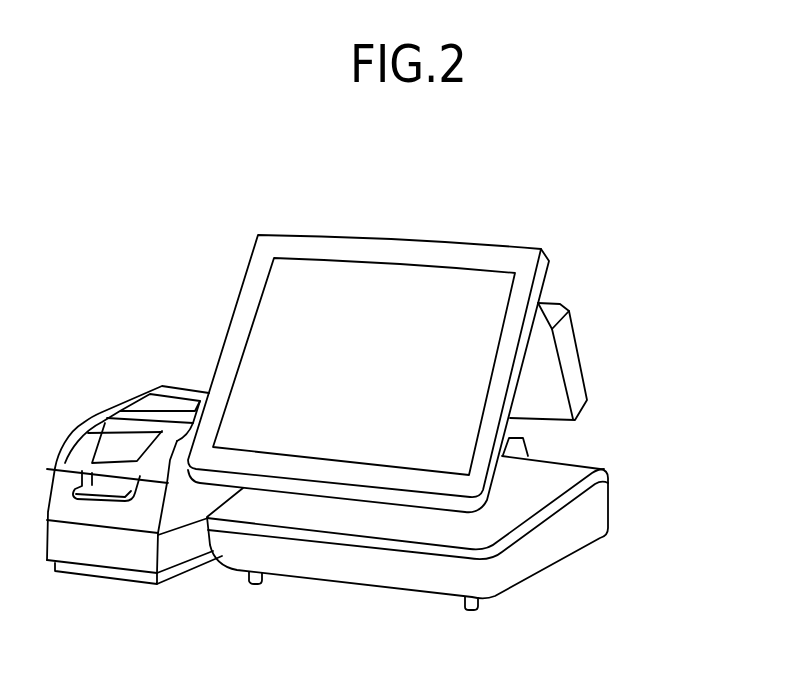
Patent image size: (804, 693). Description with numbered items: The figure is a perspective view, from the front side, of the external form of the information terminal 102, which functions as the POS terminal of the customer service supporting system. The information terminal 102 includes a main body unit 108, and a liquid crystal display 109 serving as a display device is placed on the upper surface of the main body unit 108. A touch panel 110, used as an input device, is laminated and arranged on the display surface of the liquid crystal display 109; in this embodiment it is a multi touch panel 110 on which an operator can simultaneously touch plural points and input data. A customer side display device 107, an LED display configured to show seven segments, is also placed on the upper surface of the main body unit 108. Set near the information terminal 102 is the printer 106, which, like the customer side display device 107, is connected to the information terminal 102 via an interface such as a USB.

The information terminal 102 is at (195, 196).
The printer 106 is at (92, 515).
The customer side display device 107 is at (573, 373).
The main body unit 108 is at (530, 492).
The liquid crystal display 109 is at (459, 258).
The touch panel 110 is at (310, 300).